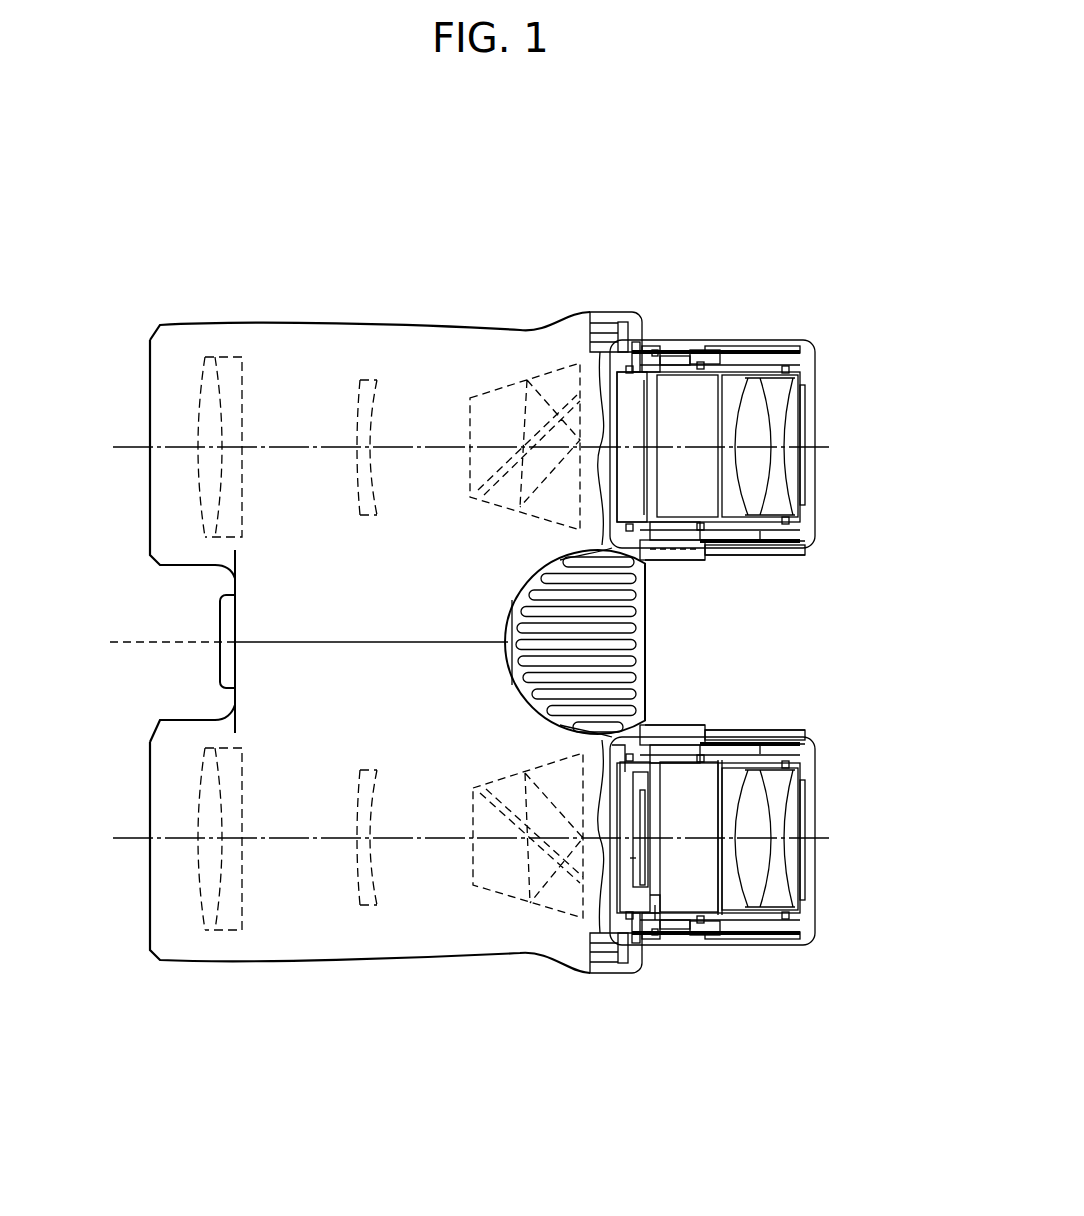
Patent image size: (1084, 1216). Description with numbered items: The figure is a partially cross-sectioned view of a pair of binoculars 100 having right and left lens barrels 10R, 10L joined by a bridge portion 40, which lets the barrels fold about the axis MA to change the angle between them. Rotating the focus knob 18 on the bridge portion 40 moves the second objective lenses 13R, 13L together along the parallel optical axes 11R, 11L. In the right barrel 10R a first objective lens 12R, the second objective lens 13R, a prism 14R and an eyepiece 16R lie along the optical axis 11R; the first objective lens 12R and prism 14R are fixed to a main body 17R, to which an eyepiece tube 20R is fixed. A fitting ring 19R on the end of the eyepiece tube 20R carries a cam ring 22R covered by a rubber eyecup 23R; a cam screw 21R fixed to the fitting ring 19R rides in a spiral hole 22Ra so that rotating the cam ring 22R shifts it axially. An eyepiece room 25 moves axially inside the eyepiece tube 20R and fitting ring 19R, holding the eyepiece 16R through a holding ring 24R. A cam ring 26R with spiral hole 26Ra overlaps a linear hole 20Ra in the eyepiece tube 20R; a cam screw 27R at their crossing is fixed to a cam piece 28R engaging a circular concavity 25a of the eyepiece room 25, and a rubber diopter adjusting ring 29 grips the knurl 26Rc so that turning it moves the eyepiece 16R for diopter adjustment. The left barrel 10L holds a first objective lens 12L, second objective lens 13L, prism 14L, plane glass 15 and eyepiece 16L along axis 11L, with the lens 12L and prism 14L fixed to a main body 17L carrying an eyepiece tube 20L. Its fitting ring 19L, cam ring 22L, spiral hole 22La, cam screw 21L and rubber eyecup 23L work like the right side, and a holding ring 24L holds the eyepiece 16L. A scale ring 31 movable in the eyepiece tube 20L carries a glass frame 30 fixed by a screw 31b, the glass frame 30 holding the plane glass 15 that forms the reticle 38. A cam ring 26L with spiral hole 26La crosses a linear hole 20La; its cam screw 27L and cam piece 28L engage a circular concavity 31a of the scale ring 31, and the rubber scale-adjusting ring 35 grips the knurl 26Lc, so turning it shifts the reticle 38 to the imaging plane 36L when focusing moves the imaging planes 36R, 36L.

The binoculars 100 is at (466, 206).
The right lens barrel 10R is at (300, 322).
The left lens barrel 10L is at (300, 963).
The right optical axis 11R is at (125, 447).
The left optical axis 11L is at (130, 838).
The right first objective lens 12R is at (228, 352).
The left first objective lens 12L is at (230, 936).
The right second objective lens 13R is at (368, 378).
The left second objective lens 13L is at (370, 908).
The right prism 14R is at (493, 387).
The left prism 14L is at (497, 902).
The plane glass 15 is at (648, 820).
The right eyepiece 16R is at (790, 430).
The left eyepiece 16L is at (790, 810).
The right main body 17R is at (600, 334).
The left main body 17L is at (605, 968).
The focus knob 18 is at (646, 648).
The right fitting ring 19R is at (805, 352).
The left fitting ring 19L is at (806, 932).
The right eyepiece tube 20R is at (622, 340).
The left eyepiece tube 20L is at (625, 962).
The right linear hole 20Ra is at (735, 350).
The left linear hole 20La is at (690, 945).
The right eyecup cam screw 21R is at (782, 556).
The left eyecup cam screw 21L is at (772, 748).
The right eyecup cam ring 22R is at (755, 562).
The left eyecup cam ring 22L is at (742, 745).
The right spiral hole 22Ra is at (790, 537).
The left spiral hole 22La is at (788, 745).
The right rubber eyecup 23R is at (730, 556).
The left rubber eyecup 23L is at (720, 750).
The right holding ring 24R is at (795, 370).
The left holding ring 24L is at (800, 915).
The eyepiece room 25 is at (688, 380).
The circular concavity 25a is at (650, 500).
The right diopter cam ring 26R is at (690, 565).
The left scale cam ring 26L is at (692, 738).
The right spiral hole 26Ra is at (682, 352).
The left spiral hole 26La is at (675, 952).
The right knurl 26Rc is at (700, 355).
The left knurl 26Lc is at (685, 952).
The right cam screw 27R is at (668, 350).
The left cam screw 27L is at (665, 950).
The right cam piece 28R is at (656, 348).
The left cam piece 28L is at (702, 945).
The diopter adjusting ring 29 is at (660, 562).
The glass frame 30 is at (655, 905).
The scale ring 31 is at (678, 762).
The circular concavity 31a is at (670, 906).
The screw 31b is at (628, 770).
The scale-adjusting ring 35 is at (656, 733).
The right imaging plane 36R is at (638, 348).
The left imaging plane 36L is at (648, 955).
The reticle 38 is at (632, 858).
The bridge portion 40 is at (258, 705).
The folding axis MA is at (158, 640).